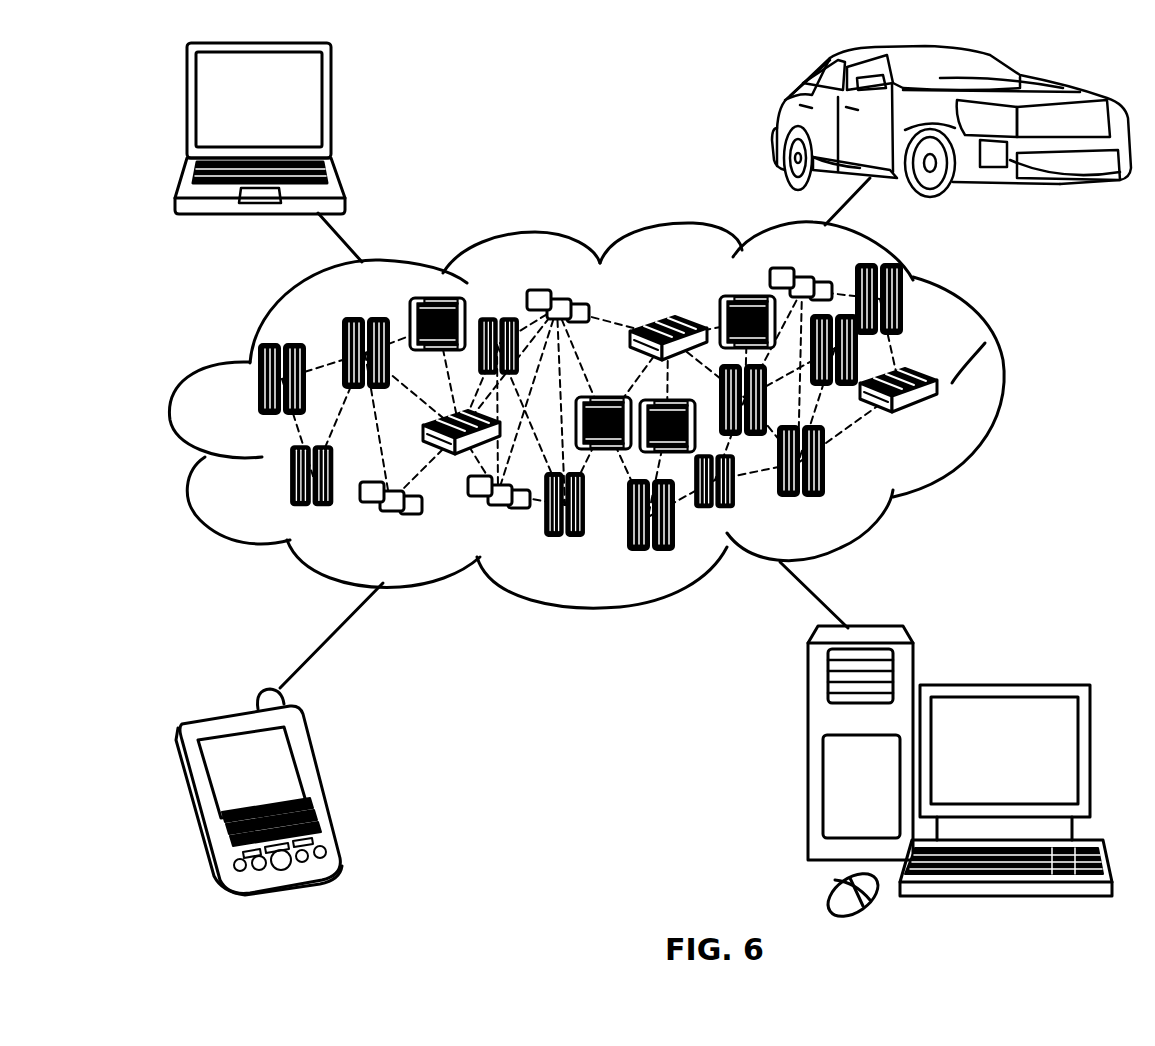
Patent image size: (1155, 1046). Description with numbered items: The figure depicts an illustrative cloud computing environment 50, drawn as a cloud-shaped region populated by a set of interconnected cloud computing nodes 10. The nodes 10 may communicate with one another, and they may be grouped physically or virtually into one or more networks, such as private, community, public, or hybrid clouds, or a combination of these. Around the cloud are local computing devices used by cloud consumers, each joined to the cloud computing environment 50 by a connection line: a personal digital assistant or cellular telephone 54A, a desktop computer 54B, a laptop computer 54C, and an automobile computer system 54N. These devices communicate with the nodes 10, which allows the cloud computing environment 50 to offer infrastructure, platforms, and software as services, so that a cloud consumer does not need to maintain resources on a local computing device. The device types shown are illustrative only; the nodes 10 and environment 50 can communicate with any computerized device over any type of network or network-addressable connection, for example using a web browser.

The cloud computing nodes 10 is at (952, 421).
The cloud computing environment 50 is at (1005, 390).
The personal digital assistant or cellular telephone 54A is at (322, 783).
The desktop computer 54B is at (1003, 685).
The laptop computer 54C is at (331, 107).
The automobile computer system 54N is at (775, 124).